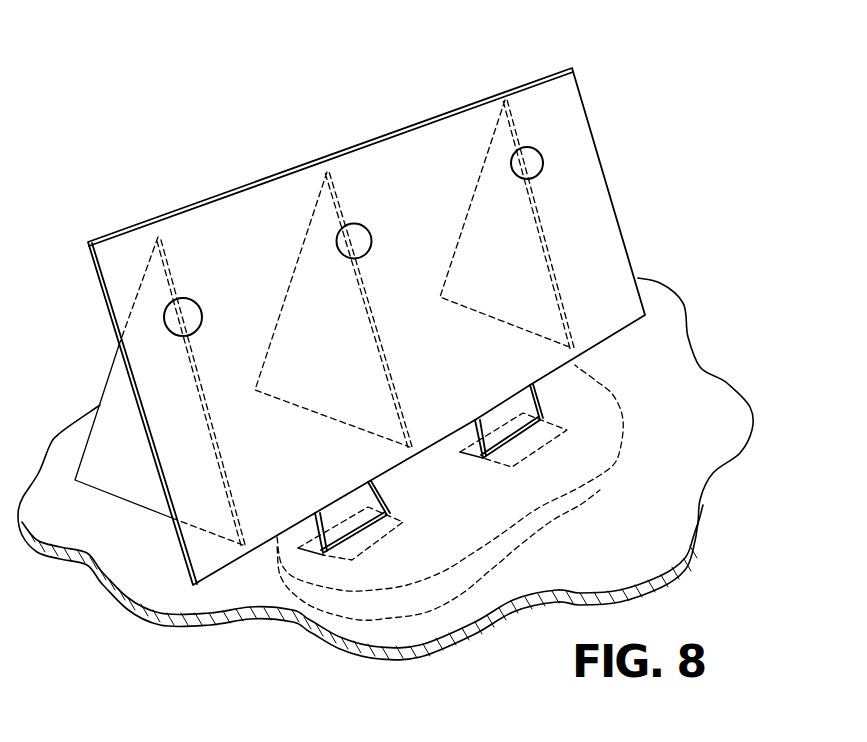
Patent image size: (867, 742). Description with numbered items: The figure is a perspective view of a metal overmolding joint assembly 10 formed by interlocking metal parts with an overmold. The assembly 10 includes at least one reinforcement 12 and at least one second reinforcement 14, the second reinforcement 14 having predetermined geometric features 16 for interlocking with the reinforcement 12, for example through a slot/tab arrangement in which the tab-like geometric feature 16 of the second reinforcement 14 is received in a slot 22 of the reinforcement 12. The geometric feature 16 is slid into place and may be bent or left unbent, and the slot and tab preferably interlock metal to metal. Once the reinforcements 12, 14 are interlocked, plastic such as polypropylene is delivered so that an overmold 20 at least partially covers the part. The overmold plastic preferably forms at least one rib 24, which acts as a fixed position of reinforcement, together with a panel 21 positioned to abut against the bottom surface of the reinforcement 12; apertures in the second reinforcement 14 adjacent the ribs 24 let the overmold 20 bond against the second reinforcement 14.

The metal overmolding joint assembly 10 is at (707, 231).
The reinforcement 12 is at (667, 542).
The second reinforcement 14 is at (588, 198).
The geometric feature 16 is at (567, 416).
The overmold 20 is at (203, 305).
The panel 21 is at (587, 500).
The slot 22 is at (535, 408).
The rib 24 is at (168, 262).